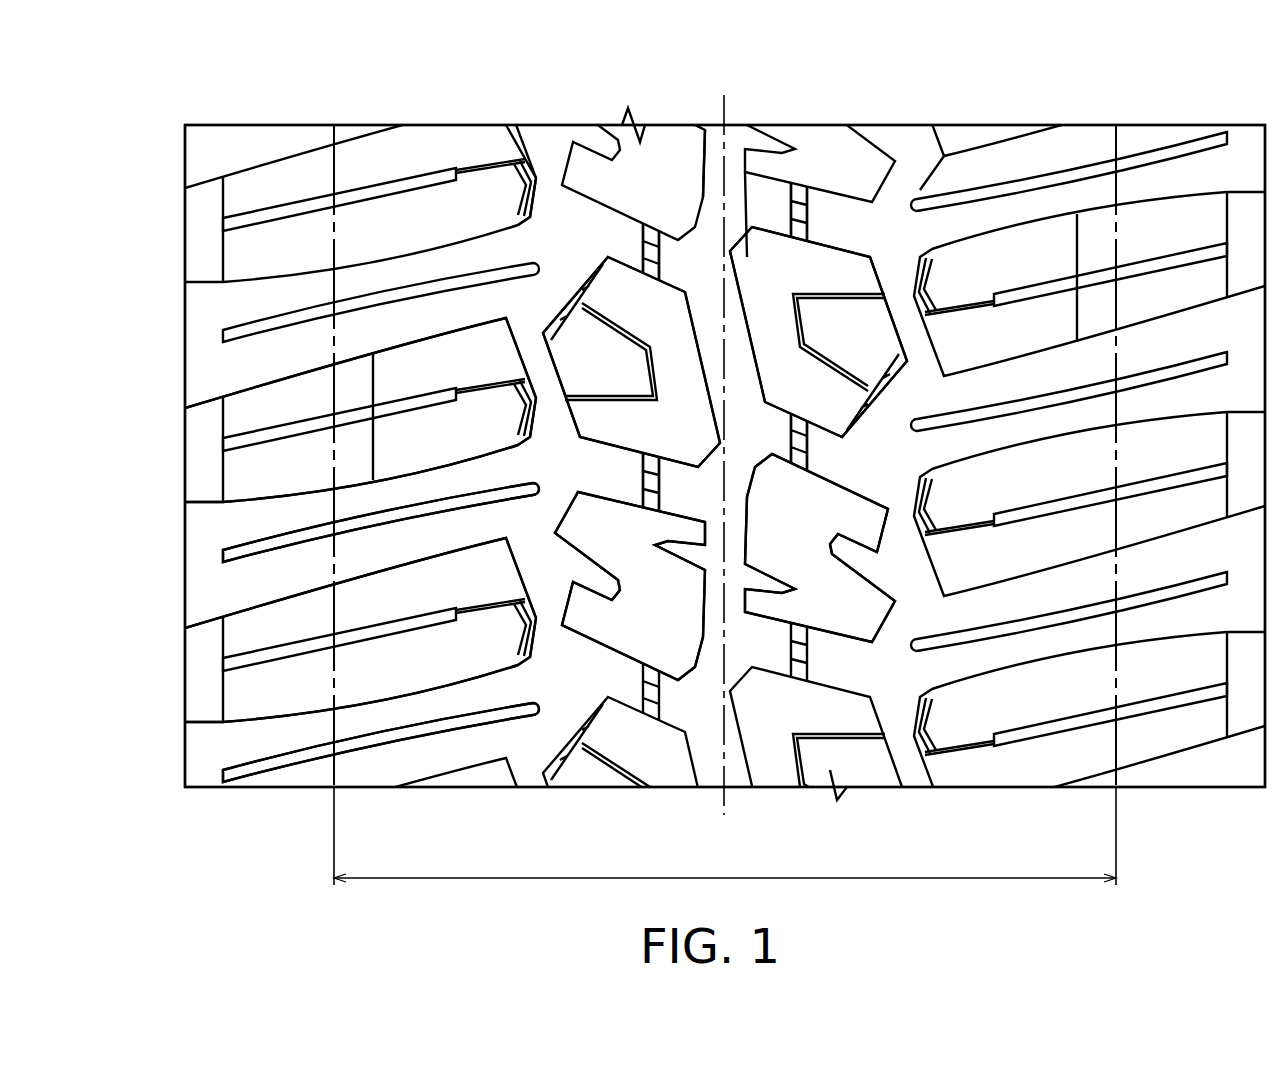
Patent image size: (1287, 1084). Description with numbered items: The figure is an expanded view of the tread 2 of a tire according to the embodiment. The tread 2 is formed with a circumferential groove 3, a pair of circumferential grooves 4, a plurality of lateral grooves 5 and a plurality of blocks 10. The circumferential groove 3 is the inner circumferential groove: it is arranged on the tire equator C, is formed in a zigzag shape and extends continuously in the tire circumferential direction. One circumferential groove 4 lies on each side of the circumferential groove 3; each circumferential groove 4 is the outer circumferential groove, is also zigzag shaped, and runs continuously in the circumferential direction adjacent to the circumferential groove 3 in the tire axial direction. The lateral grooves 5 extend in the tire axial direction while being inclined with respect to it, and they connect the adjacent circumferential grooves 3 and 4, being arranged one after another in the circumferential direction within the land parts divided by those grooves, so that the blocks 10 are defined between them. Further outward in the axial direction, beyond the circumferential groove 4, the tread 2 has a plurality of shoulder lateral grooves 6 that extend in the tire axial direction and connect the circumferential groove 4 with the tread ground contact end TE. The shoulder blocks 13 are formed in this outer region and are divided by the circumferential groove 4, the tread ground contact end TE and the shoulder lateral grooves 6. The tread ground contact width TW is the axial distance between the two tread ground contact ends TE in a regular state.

The tread 2 is at (950, 96).
The circumferential groove 3 is at (731, 155).
The circumferential groove 4 is at (548, 160).
The lateral groove 5 is at (611, 230).
The shoulder lateral groove 6 is at (355, 557).
The block 10 is at (627, 288).
The shoulder block 13 is at (413, 373).
The tread ground contact end TE is at (335, 137).
The tire equator C is at (724, 429).
The tread ground contact width TW is at (725, 865).